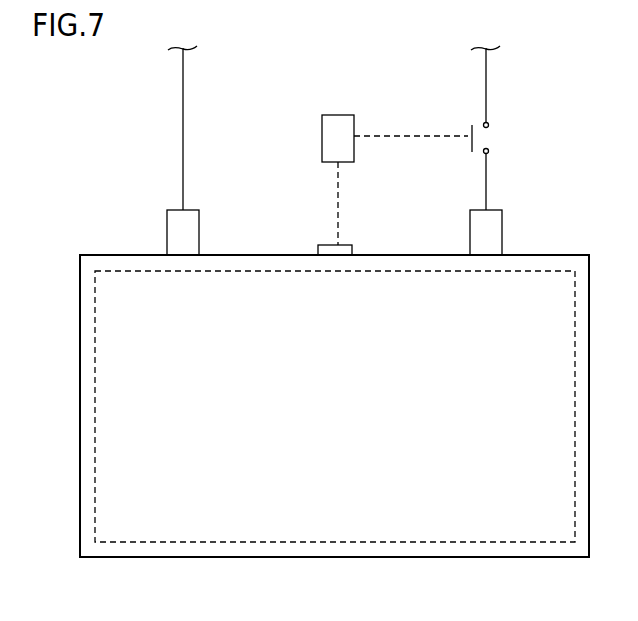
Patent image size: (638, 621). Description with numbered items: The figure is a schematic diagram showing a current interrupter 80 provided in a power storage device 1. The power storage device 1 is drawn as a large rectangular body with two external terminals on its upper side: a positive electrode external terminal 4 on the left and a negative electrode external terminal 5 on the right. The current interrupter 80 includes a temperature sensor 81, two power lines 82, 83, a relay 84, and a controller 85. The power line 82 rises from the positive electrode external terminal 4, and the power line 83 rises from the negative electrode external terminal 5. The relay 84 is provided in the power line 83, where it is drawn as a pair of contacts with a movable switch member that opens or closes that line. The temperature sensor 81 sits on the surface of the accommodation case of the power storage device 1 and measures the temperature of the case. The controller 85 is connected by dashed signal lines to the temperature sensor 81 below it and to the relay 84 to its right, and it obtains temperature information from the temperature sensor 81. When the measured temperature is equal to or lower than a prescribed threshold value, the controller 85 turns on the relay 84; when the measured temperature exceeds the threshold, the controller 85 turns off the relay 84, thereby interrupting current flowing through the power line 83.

The power storage device 1 is at (589, 345).
The positive electrode external terminal 4 is at (199, 236).
The negative electrode external terminal 5 is at (502, 237).
The current interrupter 80 is at (528, 75).
The temperature sensor 81 is at (326, 245).
The power line 82 is at (185, 87).
The power line 83 is at (489, 181).
The relay 84 is at (469, 152).
The controller 85 is at (337, 112).